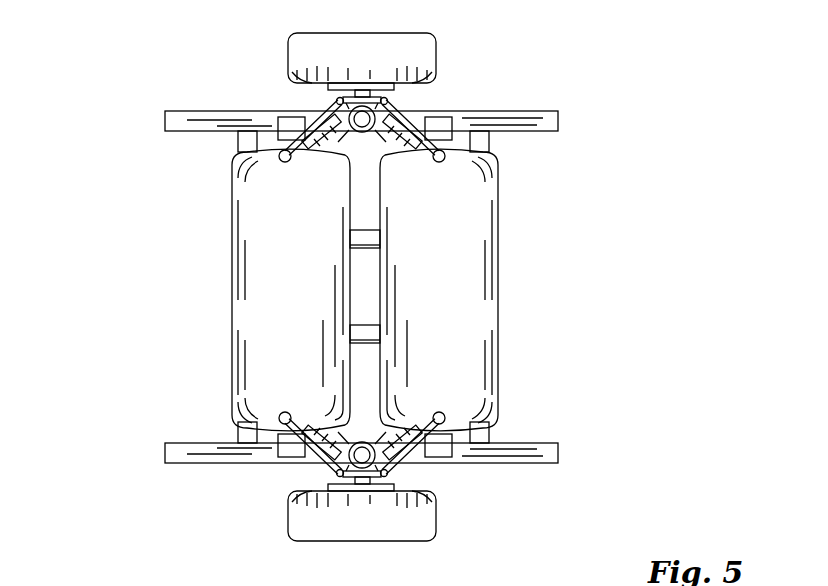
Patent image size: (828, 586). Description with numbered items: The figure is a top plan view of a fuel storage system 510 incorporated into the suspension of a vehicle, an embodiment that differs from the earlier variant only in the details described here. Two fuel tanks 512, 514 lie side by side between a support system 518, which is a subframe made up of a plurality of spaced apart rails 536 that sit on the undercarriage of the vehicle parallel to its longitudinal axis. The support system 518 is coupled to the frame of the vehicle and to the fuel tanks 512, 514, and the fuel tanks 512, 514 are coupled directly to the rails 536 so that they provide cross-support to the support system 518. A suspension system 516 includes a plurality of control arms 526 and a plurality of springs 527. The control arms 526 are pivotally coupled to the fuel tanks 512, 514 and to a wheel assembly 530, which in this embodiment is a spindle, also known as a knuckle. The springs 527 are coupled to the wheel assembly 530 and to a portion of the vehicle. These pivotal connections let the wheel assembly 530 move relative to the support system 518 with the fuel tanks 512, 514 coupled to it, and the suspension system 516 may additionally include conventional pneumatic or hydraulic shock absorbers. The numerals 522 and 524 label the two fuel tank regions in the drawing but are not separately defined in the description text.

The fuel storage system 510 is at (118, 94).
The fuel tank 512 is at (308, 291).
The fuel tank 514 is at (465, 291).
The suspension system 516 is at (318, 103).
The support system 518 is at (552, 108).
The first tank body 522 is at (258, 216).
The second tank body 524 is at (466, 222).
The control arm 526 is at (322, 118).
The spring 527 is at (415, 115).
The wheel assembly 530 is at (393, 472).
The rail 536 is at (522, 118).